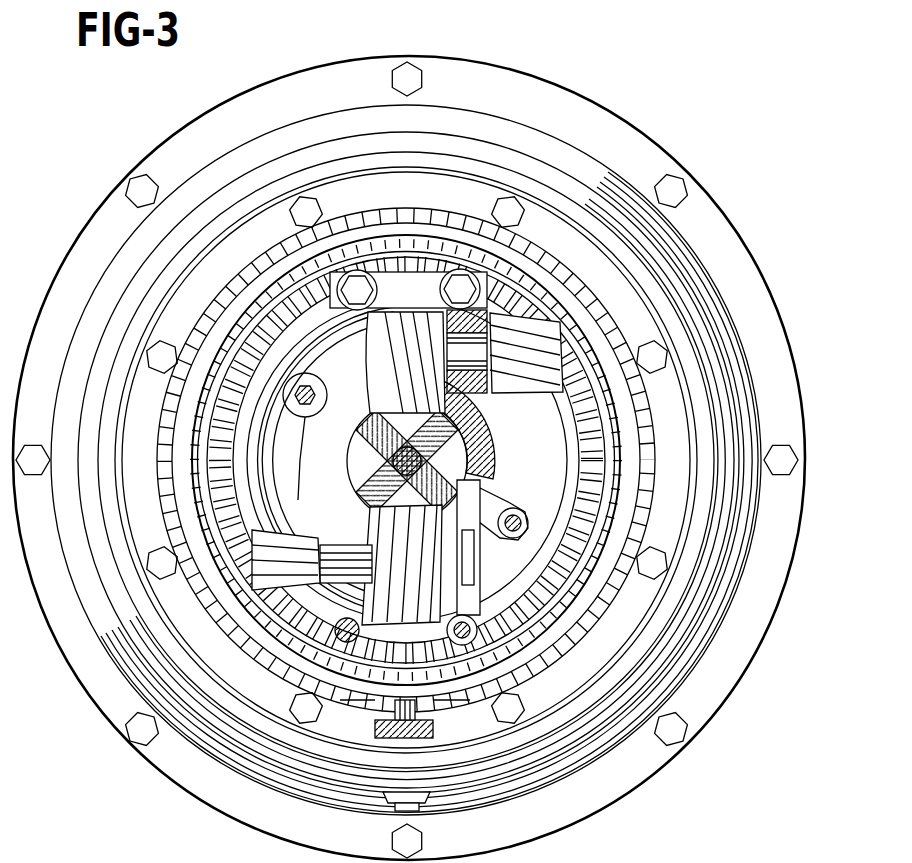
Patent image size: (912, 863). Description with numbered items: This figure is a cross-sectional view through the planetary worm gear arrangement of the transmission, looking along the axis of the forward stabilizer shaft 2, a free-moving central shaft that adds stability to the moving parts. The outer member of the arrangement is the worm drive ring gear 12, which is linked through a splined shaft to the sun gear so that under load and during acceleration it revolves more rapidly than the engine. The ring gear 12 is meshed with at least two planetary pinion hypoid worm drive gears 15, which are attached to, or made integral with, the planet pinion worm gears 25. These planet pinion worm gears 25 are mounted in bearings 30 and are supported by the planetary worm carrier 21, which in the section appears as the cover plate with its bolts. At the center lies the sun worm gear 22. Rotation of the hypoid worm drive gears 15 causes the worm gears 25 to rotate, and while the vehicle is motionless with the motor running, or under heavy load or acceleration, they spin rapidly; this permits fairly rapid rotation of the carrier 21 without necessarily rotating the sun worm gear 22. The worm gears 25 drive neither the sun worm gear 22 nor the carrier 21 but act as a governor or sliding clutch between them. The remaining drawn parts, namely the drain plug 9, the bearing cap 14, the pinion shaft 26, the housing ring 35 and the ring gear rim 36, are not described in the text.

The forward stabilizer shaft 2 is at (355, 445).
The drain plug 9 is at (423, 790).
The worm drive ring gear 12 is at (562, 524).
The bearing cap 14 is at (432, 733).
The planetary pinion hypoid worm drive gear 15 is at (526, 368).
The planetary worm carrier 21 is at (399, 294).
The sun worm gear 22 is at (473, 442).
The planet pinion worm gear 25 is at (372, 388).
The pinion shaft 26 is at (476, 393).
The bearing 30 is at (470, 553).
The housing 35 is at (598, 203).
The ring gear rim 36 is at (616, 340).